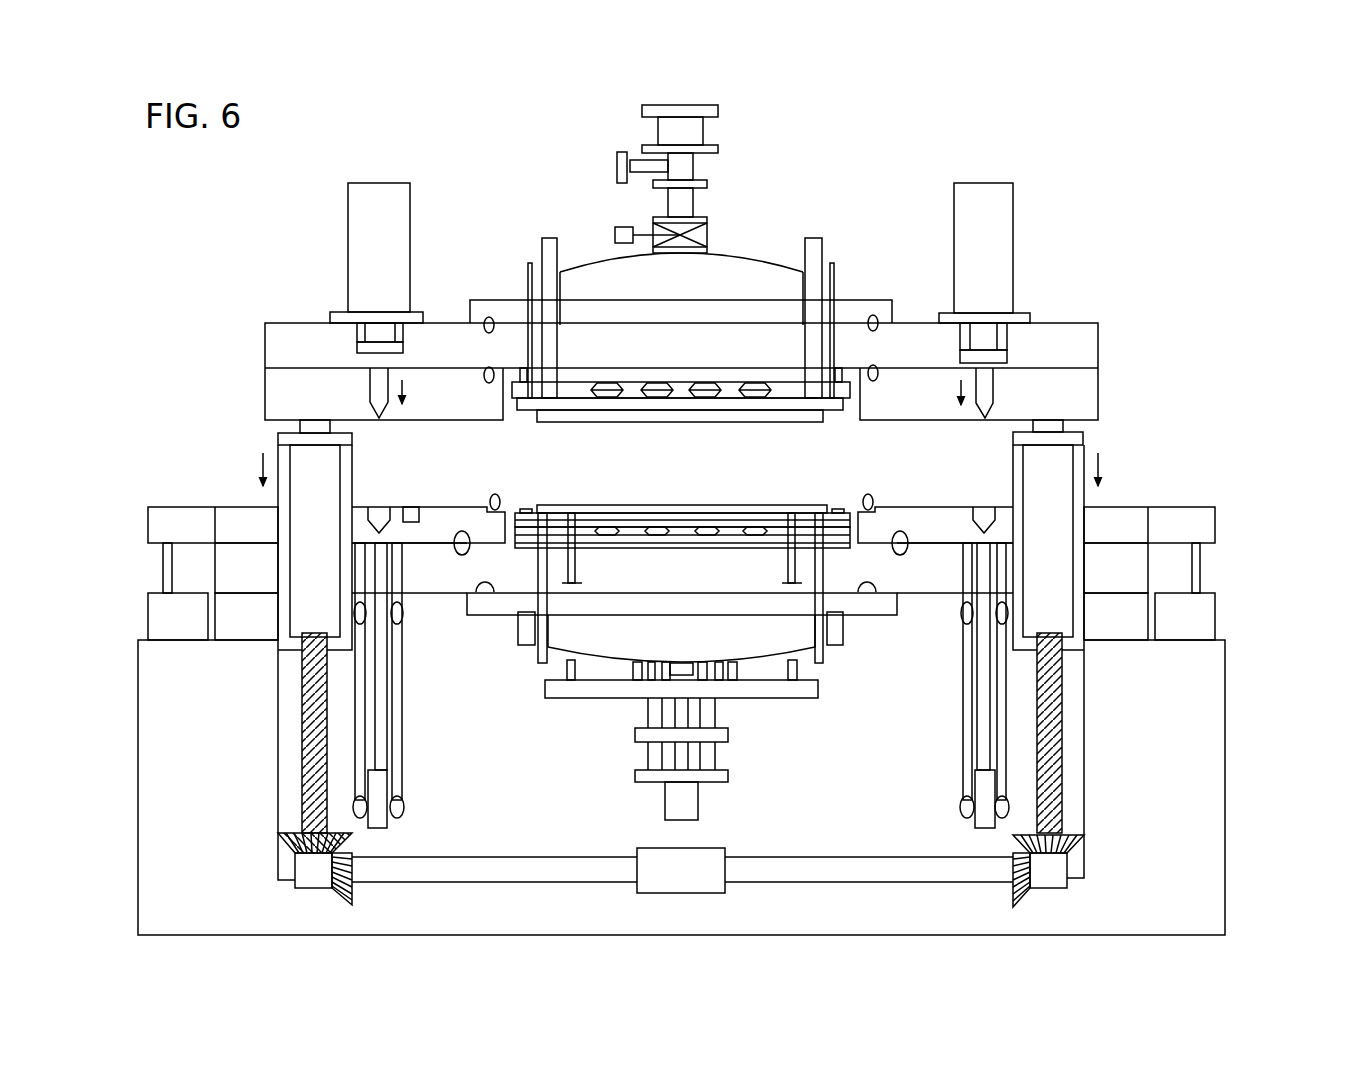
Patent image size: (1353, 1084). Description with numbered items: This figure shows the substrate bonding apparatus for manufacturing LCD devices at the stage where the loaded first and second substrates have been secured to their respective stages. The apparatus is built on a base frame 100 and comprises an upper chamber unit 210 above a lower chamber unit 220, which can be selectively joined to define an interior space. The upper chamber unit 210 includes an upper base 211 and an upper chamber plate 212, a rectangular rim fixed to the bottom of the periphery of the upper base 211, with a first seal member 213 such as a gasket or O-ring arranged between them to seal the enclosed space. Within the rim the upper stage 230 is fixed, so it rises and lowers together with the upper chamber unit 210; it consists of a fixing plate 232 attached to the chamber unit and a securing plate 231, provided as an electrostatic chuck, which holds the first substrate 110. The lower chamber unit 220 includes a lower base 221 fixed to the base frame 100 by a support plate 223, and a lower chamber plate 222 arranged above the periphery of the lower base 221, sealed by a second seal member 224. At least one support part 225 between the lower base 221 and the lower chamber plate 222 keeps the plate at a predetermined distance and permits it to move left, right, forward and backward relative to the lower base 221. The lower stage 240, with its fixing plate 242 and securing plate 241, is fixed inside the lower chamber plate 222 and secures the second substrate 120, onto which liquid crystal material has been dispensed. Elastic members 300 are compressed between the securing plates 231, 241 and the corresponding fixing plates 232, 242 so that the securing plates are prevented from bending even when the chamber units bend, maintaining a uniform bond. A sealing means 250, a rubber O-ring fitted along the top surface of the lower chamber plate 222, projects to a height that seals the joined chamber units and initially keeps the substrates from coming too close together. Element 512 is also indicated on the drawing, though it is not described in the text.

The base frame 100 is at (1213, 762).
The first substrate 110 is at (681, 320).
The second substrate 120 is at (553, 505).
The upper chamber unit 210 is at (1106, 351).
The upper base 211 is at (1070, 335).
The upper chamber plate 212 is at (1092, 393).
The first seal member 213 is at (483, 371).
The lower chamber unit 220 is at (1143, 499).
The lower base 221 is at (1137, 565).
The lower chamber plate 222 is at (1115, 515).
The support plate 223 is at (1118, 617).
The second seal member 224 is at (900, 555).
The support part 225 is at (961, 748).
The upper stage 230 is at (681, 440).
The securing plate 231 is at (810, 473).
The fixing plate 232 is at (784, 375).
The lower stage 240 is at (682, 545).
The securing plate 241 is at (685, 522).
The fixing plate 242 is at (637, 527).
The sealing means 250 is at (495, 494).
The elastic members 300 is at (612, 393).
The locking pin 512 is at (985, 420).